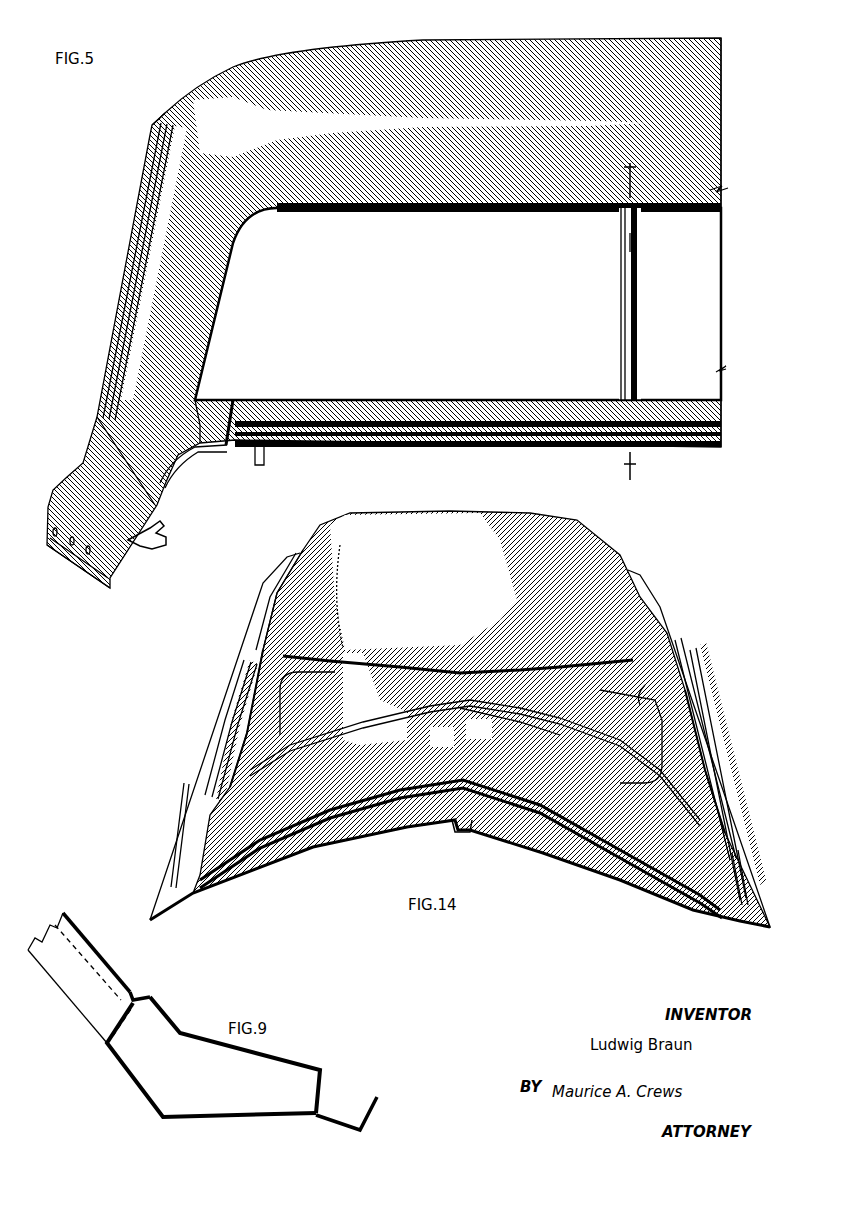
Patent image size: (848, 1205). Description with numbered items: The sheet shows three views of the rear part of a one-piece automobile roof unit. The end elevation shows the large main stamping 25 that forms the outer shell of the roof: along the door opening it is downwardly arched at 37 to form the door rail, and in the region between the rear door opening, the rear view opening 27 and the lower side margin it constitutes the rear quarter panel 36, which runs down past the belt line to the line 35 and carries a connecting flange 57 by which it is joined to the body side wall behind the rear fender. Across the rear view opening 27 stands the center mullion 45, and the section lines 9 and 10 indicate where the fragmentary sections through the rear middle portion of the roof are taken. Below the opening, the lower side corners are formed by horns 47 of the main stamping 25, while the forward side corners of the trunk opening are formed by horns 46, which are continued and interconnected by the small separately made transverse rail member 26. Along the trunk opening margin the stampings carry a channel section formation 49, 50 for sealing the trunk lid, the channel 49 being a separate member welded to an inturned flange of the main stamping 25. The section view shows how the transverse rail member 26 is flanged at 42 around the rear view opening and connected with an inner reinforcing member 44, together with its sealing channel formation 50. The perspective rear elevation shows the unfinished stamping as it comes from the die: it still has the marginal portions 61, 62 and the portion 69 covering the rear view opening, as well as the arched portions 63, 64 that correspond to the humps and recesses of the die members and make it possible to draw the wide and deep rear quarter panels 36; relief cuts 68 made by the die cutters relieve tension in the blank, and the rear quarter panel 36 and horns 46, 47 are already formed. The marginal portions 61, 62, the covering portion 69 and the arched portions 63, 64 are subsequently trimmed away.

In FIG. 5, the main stamping 25 is at (327, 43).
In FIG. 14, the main stamping 25 is at (440, 560).
In FIG. 5, the downwardly arched portion 37 is at (183, 91).
In FIG. 5, the rear quarter panel 36 is at (145, 328).
In FIG. 14, the rear quarter panel 36 is at (250, 683).
In FIG. 5, the rear view opening 27 is at (421, 306).
In FIG. 5, the center mullion 45 is at (640, 297).
In FIG. 9, the center mullion 45 is at (78, 944).
In FIG. 5, the section line 10 is at (645, 170).
In FIG. 5, the section line 9 is at (622, 373).
In FIG. 5, the transverse rail member 26 is at (460, 400).
In FIG. 9, the transverse rail member 26 is at (298, 1062).
In FIG. 5, the channel section formation 50 is at (432, 446).
In FIG. 9, the channel section formation 50 is at (322, 1093).
In FIG. 5, the horn 46 is at (207, 420).
In FIG. 14, the horn 46 is at (245, 763).
In FIG. 5, the channel 49 is at (182, 476).
In FIG. 5, the line 35 is at (50, 508).
In FIG. 5, the connecting flange 57 is at (82, 558).
In FIG. 5, the horn 47 is at (130, 545).
In FIG. 14, the horn 47 is at (210, 818).
In FIG. 14, the marginal portion 61 is at (290, 562).
In FIG. 14, the cut 68 is at (278, 708).
In FIG. 14, the arched portion 63 is at (452, 746).
In FIG. 14, the portion covering the rear view opening 69 is at (500, 746).
In FIG. 14, the arched portion 64 is at (460, 826).
In FIG. 14, the marginal portion 62 is at (283, 862).
In FIG. 9, the flange 42 is at (133, 996).
In FIG. 9, the inner reinforcing member 44 is at (128, 1080).